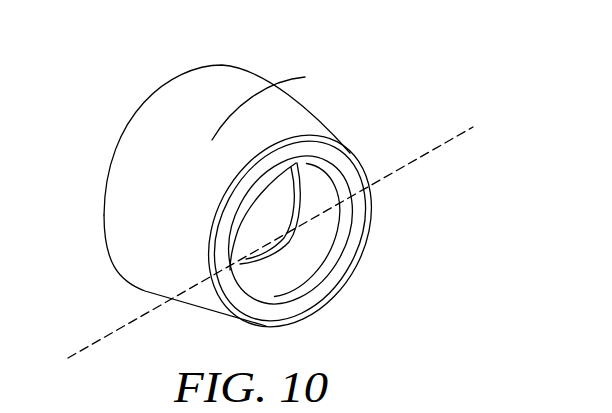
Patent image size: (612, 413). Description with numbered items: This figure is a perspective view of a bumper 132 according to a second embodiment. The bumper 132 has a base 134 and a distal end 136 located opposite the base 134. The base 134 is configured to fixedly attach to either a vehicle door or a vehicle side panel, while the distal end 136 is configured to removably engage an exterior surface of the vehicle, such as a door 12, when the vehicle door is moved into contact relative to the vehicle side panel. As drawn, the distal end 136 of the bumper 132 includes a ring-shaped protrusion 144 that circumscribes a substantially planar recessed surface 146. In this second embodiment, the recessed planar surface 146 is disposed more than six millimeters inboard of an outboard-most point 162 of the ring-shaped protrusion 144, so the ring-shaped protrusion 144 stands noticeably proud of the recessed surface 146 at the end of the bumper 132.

The door 12 is at (445, 63).
The bumper 132 is at (275, 104).
The base 134 is at (192, 90).
The distal end 136 is at (318, 135).
The ring-shaped protrusion 144 is at (355, 247).
The recessed planar surface 146 is at (273, 218).
The outboard-most point 162 is at (352, 294).